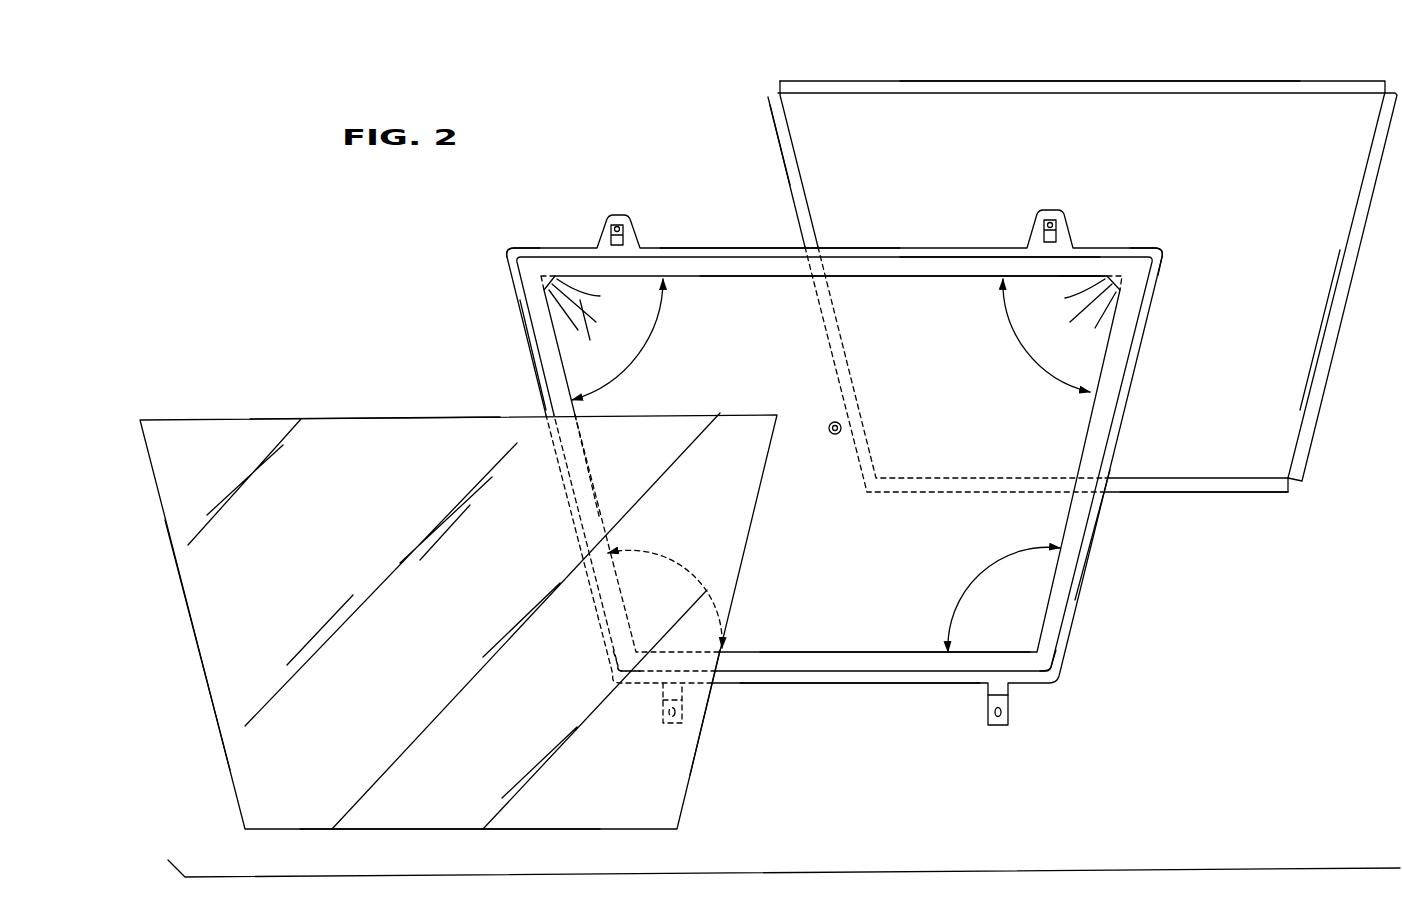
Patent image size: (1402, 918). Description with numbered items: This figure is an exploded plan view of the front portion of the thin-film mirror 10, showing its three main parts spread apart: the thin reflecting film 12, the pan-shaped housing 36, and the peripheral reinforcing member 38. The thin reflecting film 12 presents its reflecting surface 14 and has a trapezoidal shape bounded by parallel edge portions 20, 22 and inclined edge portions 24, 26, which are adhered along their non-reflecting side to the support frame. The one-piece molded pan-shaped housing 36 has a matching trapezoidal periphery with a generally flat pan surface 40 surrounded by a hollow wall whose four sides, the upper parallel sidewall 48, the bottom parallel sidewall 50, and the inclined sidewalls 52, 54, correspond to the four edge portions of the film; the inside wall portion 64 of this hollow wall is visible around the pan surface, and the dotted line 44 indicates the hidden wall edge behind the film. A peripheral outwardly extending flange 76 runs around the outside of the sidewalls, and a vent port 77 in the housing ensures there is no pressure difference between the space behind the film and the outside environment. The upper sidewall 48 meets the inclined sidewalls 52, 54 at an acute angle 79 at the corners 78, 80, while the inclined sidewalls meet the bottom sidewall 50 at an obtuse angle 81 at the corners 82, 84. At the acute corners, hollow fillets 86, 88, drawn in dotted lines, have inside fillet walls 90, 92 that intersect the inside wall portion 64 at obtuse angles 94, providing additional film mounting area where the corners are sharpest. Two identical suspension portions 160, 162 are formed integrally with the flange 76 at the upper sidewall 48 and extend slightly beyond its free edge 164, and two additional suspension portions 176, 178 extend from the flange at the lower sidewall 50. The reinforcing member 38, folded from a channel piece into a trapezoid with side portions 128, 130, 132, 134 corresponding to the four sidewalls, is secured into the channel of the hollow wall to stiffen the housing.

The thin-film mirror 10 is at (600, 113).
The thin reflecting film 12 is at (247, 418).
The reflecting surface 14 is at (387, 428).
The parallel edge portion 20 is at (329, 418).
The parallel edge portion 22 is at (437, 831).
The inclined edge portion 24 is at (686, 810).
The inclined edge portion 26 is at (213, 727).
The pan-shaped housing 36 is at (770, 245).
The reinforcing member 38 is at (1055, 68).
The pan surface 40 is at (832, 464).
The left frame member inner edge 44 is at (570, 520).
The upper parallel sidewall 48 is at (949, 262).
The bottom parallel sidewall 50 is at (838, 685).
The inclined sidewall 52 is at (1068, 597).
The inclined sidewall 54 is at (545, 397).
The inside wall portion 64 is at (887, 278).
The peripheral outwardly extending flange 76 is at (678, 247).
The vent port 77 is at (842, 425).
The corner 78 is at (1160, 262).
The acute angle 79 is at (654, 337).
The corner 80 is at (510, 272).
The obtuse angle 81 is at (677, 567).
The corner 82 is at (622, 670).
The corner 84 is at (1062, 667).
The hollow fillet 86 is at (542, 276).
The hollow fillet 88 is at (1121, 275).
The inside fillet wall 90 is at (1074, 314).
The inside fillet wall 92 is at (589, 314).
The obtuse angle 94 is at (832, 317).
The side portion 128 is at (1162, 80).
The side portion 130 is at (1192, 493).
The side portion 132 is at (1322, 402).
The side portion 134 is at (768, 117).
The suspension portion 160 is at (618, 214).
The suspension portion 162 is at (1050, 209).
The free edge 164 is at (886, 247).
The suspension portion 176 is at (680, 724).
The suspension portion 178 is at (996, 727).